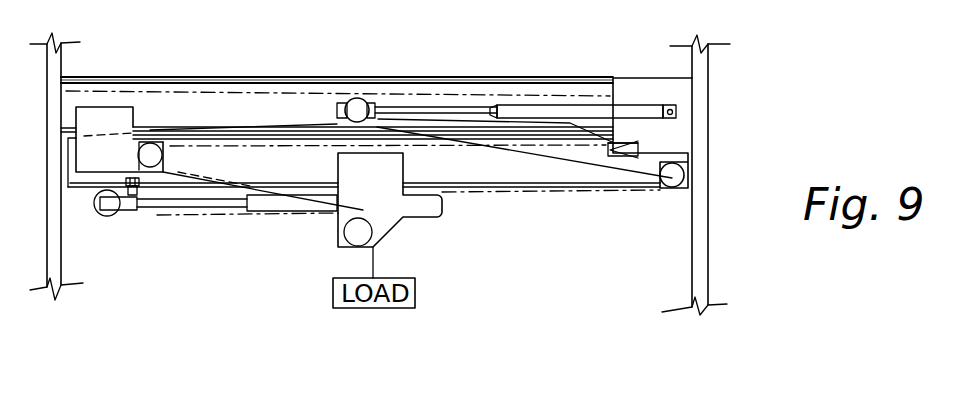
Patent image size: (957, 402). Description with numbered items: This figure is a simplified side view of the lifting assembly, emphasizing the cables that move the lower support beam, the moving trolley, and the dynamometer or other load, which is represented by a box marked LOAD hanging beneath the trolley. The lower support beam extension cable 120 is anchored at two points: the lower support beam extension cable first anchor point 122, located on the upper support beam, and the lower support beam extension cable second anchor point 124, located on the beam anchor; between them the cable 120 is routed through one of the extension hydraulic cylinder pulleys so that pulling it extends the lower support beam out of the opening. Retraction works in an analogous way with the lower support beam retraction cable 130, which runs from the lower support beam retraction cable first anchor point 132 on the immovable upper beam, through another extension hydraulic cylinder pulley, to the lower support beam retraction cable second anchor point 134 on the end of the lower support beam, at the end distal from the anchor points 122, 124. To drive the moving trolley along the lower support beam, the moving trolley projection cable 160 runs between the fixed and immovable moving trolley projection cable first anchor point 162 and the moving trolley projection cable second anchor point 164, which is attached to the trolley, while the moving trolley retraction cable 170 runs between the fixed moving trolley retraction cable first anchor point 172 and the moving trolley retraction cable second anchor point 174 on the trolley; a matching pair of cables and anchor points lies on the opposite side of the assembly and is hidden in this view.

The lower support beam extension cable 120 is at (316, 98).
The lower support beam extension cable first anchor point 122 is at (61, 88).
The lower support beam extension cable second anchor point 124 is at (84, 137).
The lower support beam retraction cable 130 is at (466, 95).
The lower support beam retraction cable first anchor point 132 is at (638, 93).
The lower support beam retraction cable second anchor point 134 is at (672, 177).
The moving trolley projection cable 160 is at (467, 197).
The moving trolley projection cable first anchor point 162 is at (640, 142).
The moving trolley projection cable second anchor point 164 is at (373, 200).
The moving trolley retraction cable 170 is at (178, 173).
The moving trolley retraction cable first anchor point 172 is at (615, 142).
The moving trolley retraction cable second anchor point 174 is at (360, 212).